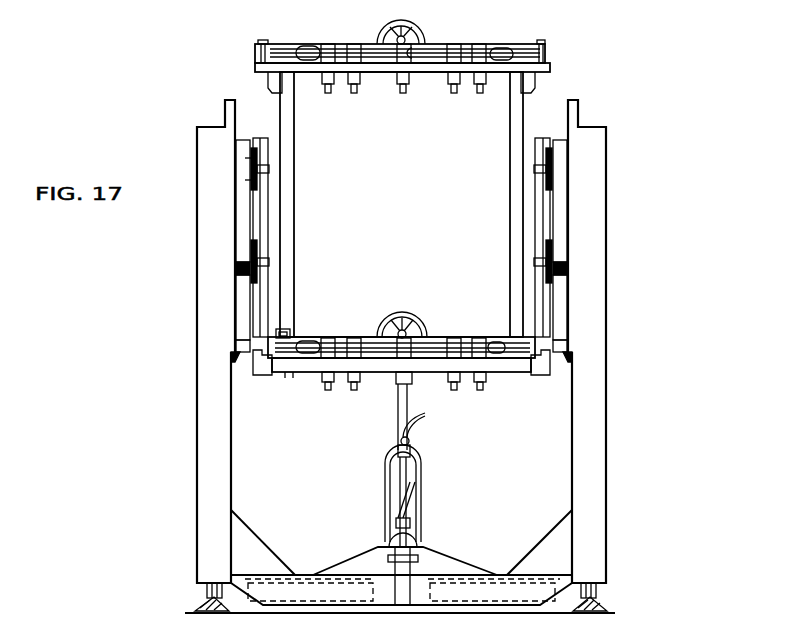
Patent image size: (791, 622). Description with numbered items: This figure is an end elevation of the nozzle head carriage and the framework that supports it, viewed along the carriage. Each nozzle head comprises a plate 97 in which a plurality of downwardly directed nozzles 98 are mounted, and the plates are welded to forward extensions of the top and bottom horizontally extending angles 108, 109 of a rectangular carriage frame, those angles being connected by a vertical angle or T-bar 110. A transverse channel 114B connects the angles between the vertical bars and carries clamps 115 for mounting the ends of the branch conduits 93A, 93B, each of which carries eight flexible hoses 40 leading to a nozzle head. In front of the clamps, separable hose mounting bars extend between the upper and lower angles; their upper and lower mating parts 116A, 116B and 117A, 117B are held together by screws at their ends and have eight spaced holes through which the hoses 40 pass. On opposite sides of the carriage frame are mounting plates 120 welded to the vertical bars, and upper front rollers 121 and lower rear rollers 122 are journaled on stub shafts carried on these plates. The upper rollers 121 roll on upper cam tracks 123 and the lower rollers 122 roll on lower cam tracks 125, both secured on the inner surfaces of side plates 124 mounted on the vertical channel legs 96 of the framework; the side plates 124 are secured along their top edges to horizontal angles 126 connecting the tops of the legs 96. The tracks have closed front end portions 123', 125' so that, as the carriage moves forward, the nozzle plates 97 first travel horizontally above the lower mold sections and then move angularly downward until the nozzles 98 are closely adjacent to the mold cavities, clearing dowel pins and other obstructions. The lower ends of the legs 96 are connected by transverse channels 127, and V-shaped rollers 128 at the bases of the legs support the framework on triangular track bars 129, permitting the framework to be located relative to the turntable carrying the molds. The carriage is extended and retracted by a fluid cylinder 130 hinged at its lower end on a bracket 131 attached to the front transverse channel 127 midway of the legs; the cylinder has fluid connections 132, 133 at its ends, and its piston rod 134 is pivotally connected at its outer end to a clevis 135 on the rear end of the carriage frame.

The flexible hoses 40 is at (440, 50).
The branch conduit 93A is at (385, 27).
The branch conduit 93B is at (407, 333).
The vertical legs 96 is at (210, 432).
The nozzle plate 97 is at (550, 64).
The nozzles 98 is at (329, 95).
The top horizontal angle 108 is at (268, 80).
The bottom horizontal angle 109 is at (263, 356).
The vertical angle or T-bar 110 is at (289, 219).
The transverse channel 114B is at (512, 370).
The clamps 115 is at (419, 35).
The upper mating part of hose mounting bar 116A is at (257, 46).
The lower mating part of hose mounting bar 116B is at (254, 58).
The upper mating part of hose mounting bar 117A is at (297, 335).
The lower mating part of hose mounting bar 117B is at (290, 360).
The mounting plates 120 is at (270, 205).
The upper front rollers 121 is at (257, 168).
The lower rear rollers 122 is at (250, 265).
The upper cam tracks 123 is at (412, 198).
The closed front end portion 123' is at (413, 265).
The side plates 124 is at (240, 300).
The lower cam tracks 125 is at (396, 343).
The closed front end portion 125' is at (393, 374).
The horizontal angles 126 is at (226, 110).
The transverse channels 127 is at (557, 577).
The V-shaped rollers 128 is at (207, 589).
The triangular track bars 129 is at (202, 601).
The fluid cylinder 130 is at (420, 503).
The bracket 131 is at (433, 557).
The fluid connection 132 is at (402, 500).
The fluid connection 133 is at (418, 442).
The piston rod 134 is at (397, 412).
The clevis 135 is at (413, 378).